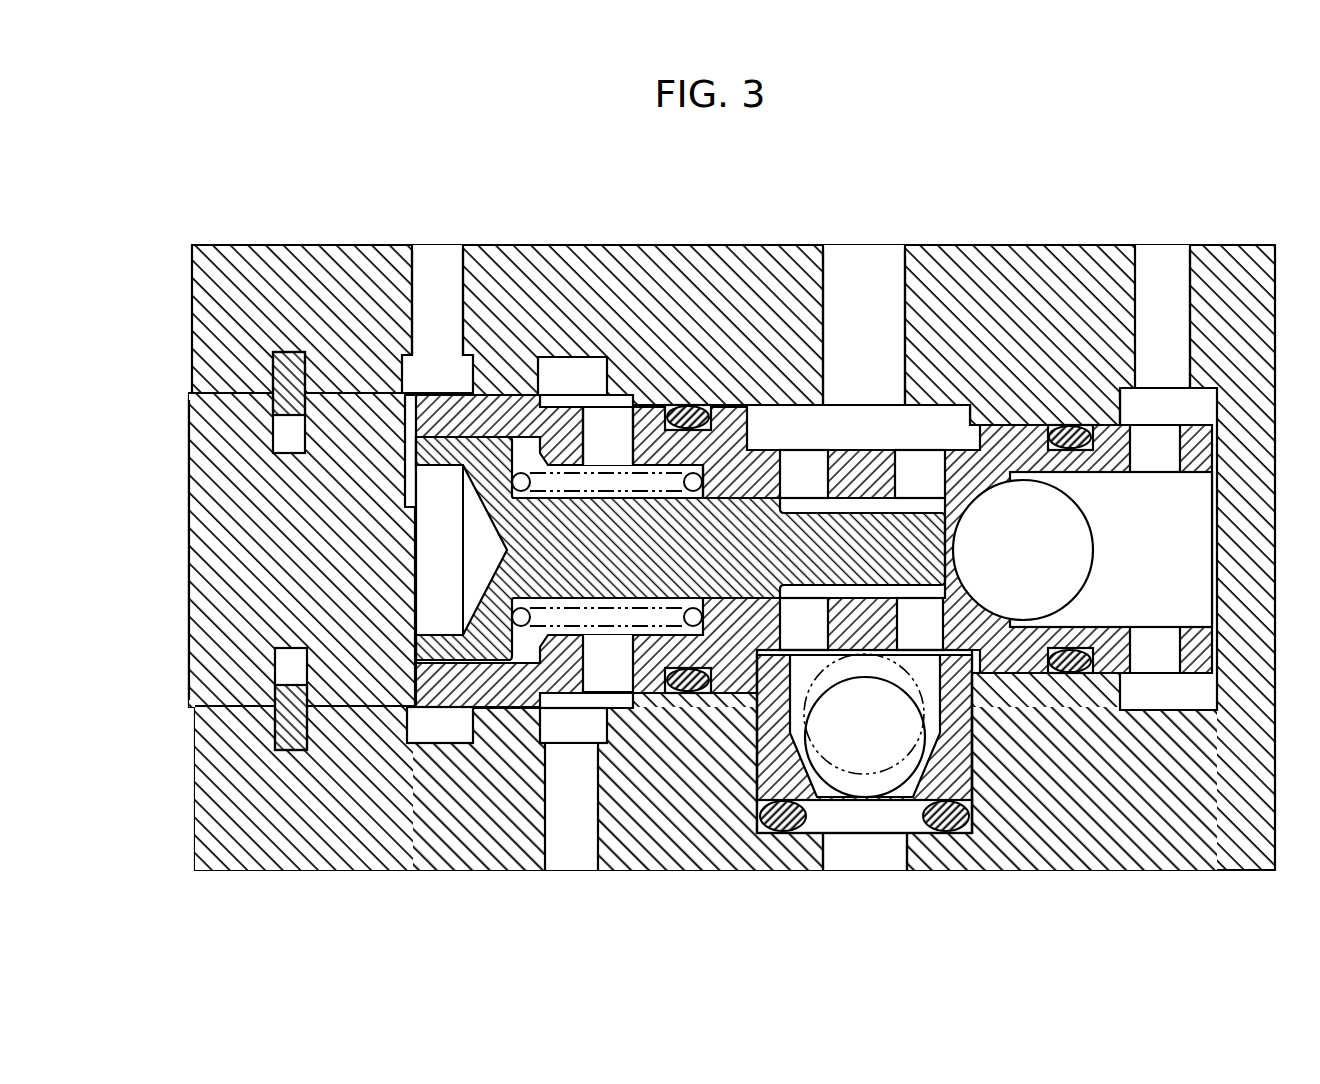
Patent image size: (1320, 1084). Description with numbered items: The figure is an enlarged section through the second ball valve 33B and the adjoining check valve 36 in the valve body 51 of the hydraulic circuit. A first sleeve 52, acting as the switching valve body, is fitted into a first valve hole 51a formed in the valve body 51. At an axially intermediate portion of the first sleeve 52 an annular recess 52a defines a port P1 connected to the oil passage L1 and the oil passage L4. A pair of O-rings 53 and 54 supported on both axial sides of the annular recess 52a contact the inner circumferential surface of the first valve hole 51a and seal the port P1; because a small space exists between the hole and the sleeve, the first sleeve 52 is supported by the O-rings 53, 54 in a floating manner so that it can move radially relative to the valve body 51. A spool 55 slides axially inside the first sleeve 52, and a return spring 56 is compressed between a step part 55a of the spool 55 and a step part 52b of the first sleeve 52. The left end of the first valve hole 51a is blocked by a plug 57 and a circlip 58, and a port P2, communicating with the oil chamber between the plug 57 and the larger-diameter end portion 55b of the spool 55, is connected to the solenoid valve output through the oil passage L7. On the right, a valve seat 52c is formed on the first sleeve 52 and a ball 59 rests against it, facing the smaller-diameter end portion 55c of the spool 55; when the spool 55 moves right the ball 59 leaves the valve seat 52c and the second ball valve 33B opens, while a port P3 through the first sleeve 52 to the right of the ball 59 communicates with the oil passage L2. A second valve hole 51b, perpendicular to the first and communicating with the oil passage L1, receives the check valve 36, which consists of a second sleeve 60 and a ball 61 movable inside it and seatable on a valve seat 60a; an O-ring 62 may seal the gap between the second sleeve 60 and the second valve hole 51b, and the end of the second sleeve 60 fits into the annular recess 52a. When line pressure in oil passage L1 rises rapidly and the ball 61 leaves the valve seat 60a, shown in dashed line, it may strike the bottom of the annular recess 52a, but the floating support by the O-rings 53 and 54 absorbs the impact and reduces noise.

The valve body 51 is at (652, 232).
The first valve hole 51a is at (750, 410).
The second valve hole 51b is at (972, 768).
The first sleeve 52 is at (1025, 410).
The annular recess 52a is at (835, 452).
The step part 52b is at (702, 487).
The valve seat 52c is at (981, 493).
The O-ring 53 is at (690, 405).
The O-ring 54 is at (1068, 428).
The spool 55 is at (495, 530).
The step part 55a is at (527, 450).
The larger-diameter end portion 55b is at (436, 447).
The smaller-diameter end portion 55c is at (904, 537).
The return spring 56 is at (683, 475).
The plug 57 is at (200, 545).
The circlip 58 is at (290, 355).
The ball 59 is at (1065, 552).
The second sleeve 60 is at (975, 750).
The valve seat 60a is at (822, 765).
The ball 61 is at (858, 795).
The O-ring 62 is at (793, 840).
The check valve 36 is at (740, 742).
The second ball valve 33B is at (945, 345).
The oil passage L1 is at (905, 855).
The oil passage L2 is at (1185, 300).
The oil passage L4 is at (905, 288).
The oil passage L7 is at (460, 290).
The port P1 is at (850, 405).
The port P2 is at (435, 377).
The port P3 is at (1155, 445).